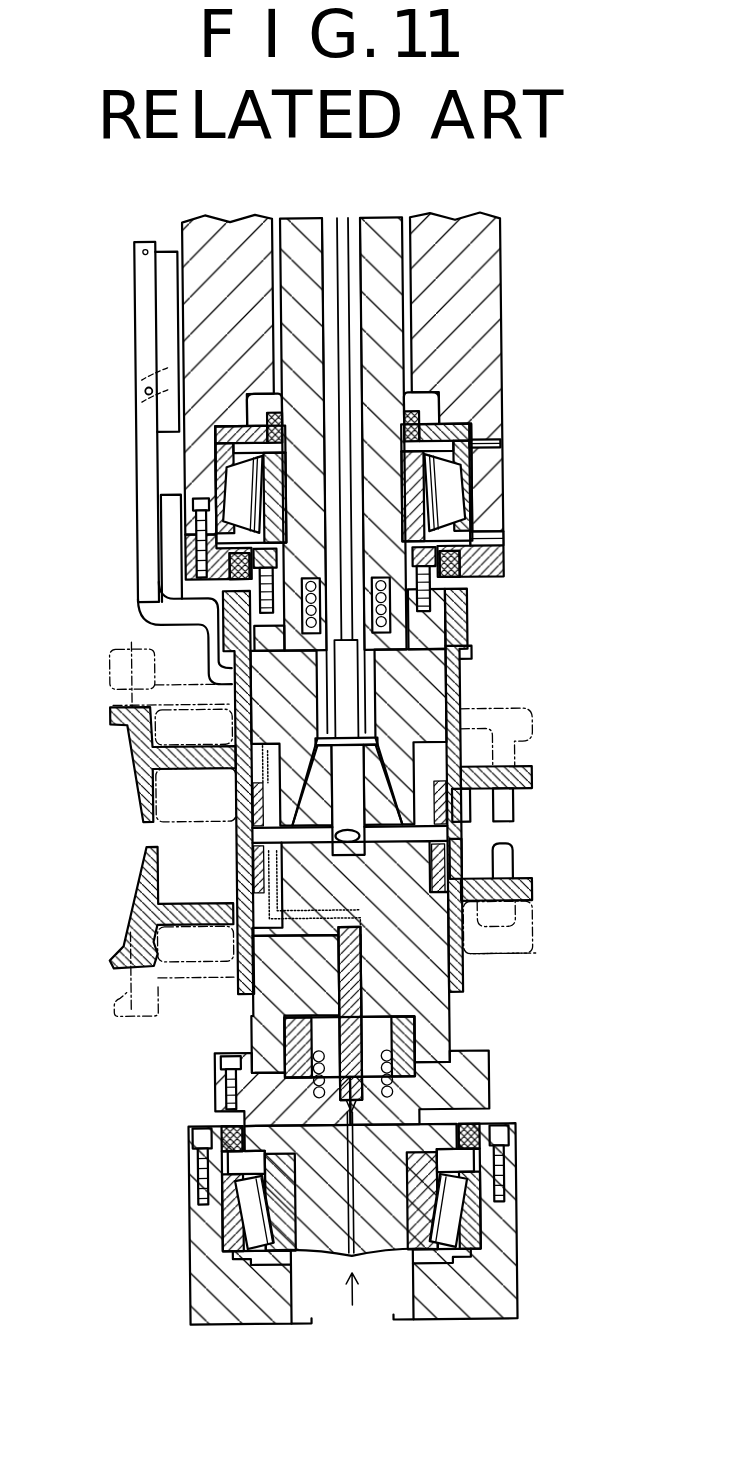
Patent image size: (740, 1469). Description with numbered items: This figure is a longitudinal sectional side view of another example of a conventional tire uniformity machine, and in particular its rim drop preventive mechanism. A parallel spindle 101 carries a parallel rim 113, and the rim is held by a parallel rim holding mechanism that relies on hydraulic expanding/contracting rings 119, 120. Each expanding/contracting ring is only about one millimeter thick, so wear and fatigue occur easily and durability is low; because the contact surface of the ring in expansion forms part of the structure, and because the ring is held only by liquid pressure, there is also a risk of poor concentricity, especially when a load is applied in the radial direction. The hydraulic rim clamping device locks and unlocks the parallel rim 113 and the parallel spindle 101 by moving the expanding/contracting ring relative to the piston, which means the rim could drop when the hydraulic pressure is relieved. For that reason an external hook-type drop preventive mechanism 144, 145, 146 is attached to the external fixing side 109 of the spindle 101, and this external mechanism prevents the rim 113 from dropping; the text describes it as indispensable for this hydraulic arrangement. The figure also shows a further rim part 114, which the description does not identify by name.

The spindle 101 is at (420, 678).
The external fixing side 109 is at (502, 313).
The rim 113 is at (138, 781).
The lower tool holder flange 114 is at (143, 893).
The hydraulic expanding/contracting ring 119 is at (443, 762).
The hydraulic expanding/contracting ring 120 is at (234, 893).
The external hook-type drop preventive mechanism 144 is at (137, 452).
The external hook-type drop preventive mechanism 145 is at (146, 386).
The external hook-type drop preventive mechanism 146 is at (210, 671).